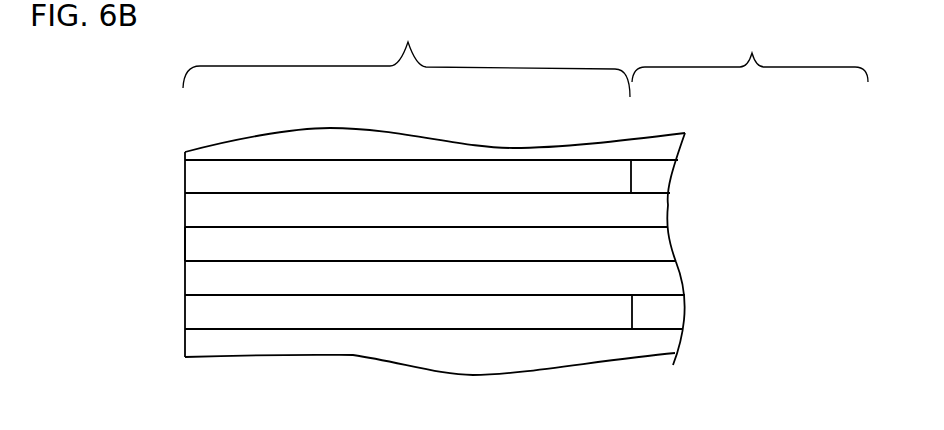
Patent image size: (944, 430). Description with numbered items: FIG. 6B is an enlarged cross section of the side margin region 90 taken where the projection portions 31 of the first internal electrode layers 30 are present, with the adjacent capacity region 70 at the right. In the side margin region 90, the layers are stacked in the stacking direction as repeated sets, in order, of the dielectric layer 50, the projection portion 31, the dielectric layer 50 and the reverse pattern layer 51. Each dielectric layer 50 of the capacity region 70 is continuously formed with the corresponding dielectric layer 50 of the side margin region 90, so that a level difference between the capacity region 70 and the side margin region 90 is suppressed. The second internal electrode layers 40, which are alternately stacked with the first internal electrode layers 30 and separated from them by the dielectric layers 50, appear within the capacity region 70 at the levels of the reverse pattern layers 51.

The first internal electrode layer 30 is at (660, 247).
The projection portion 31 is at (204, 254).
The second internal electrode layer 40 is at (653, 173).
The dielectric layer 50 is at (202, 219).
The reverse pattern layer 51 is at (200, 185).
The capacity region 70 is at (750, 52).
The side margin region 90 is at (406, 51).